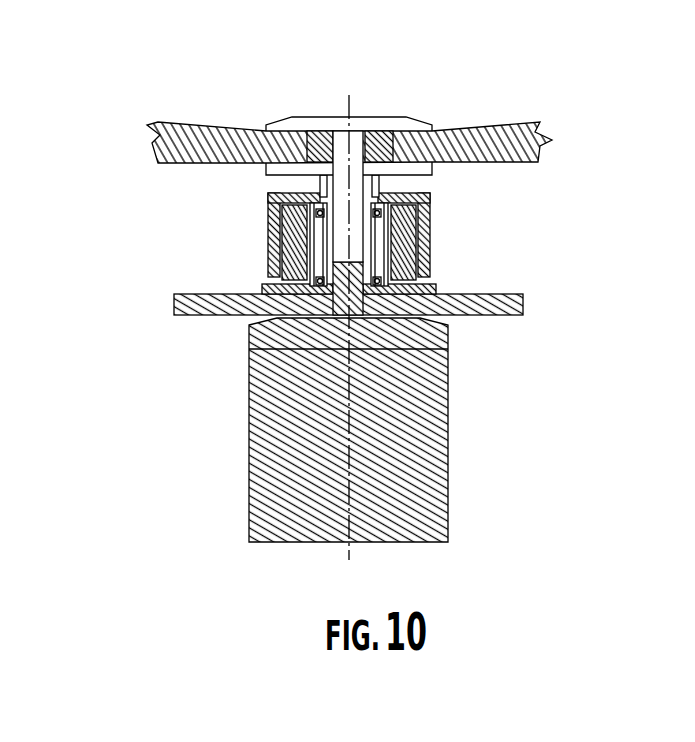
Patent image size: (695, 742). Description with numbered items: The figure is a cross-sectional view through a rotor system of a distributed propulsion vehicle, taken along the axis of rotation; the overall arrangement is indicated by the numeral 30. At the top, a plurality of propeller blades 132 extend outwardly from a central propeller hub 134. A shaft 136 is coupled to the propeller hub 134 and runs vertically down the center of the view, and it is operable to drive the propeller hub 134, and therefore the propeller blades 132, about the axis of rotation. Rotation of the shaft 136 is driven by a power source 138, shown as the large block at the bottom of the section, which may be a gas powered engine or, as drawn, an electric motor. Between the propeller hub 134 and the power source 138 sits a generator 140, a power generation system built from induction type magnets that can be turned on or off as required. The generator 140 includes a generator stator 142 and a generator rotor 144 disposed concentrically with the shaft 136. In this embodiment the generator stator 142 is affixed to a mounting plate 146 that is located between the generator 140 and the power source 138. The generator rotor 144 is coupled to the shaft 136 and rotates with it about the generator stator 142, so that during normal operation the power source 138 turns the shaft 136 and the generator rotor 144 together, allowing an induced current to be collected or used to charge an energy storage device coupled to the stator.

The rotor assembly 30 is at (122, 70).
The propeller blades 132 is at (210, 127).
The propeller hub 134 is at (346, 118).
The shaft 136 is at (355, 167).
The power source 138 is at (428, 437).
The generator 140 is at (337, 234).
The generator stator 142 is at (403, 252).
The generator rotor 144 is at (463, 218).
The mounting plate 146 is at (503, 304).